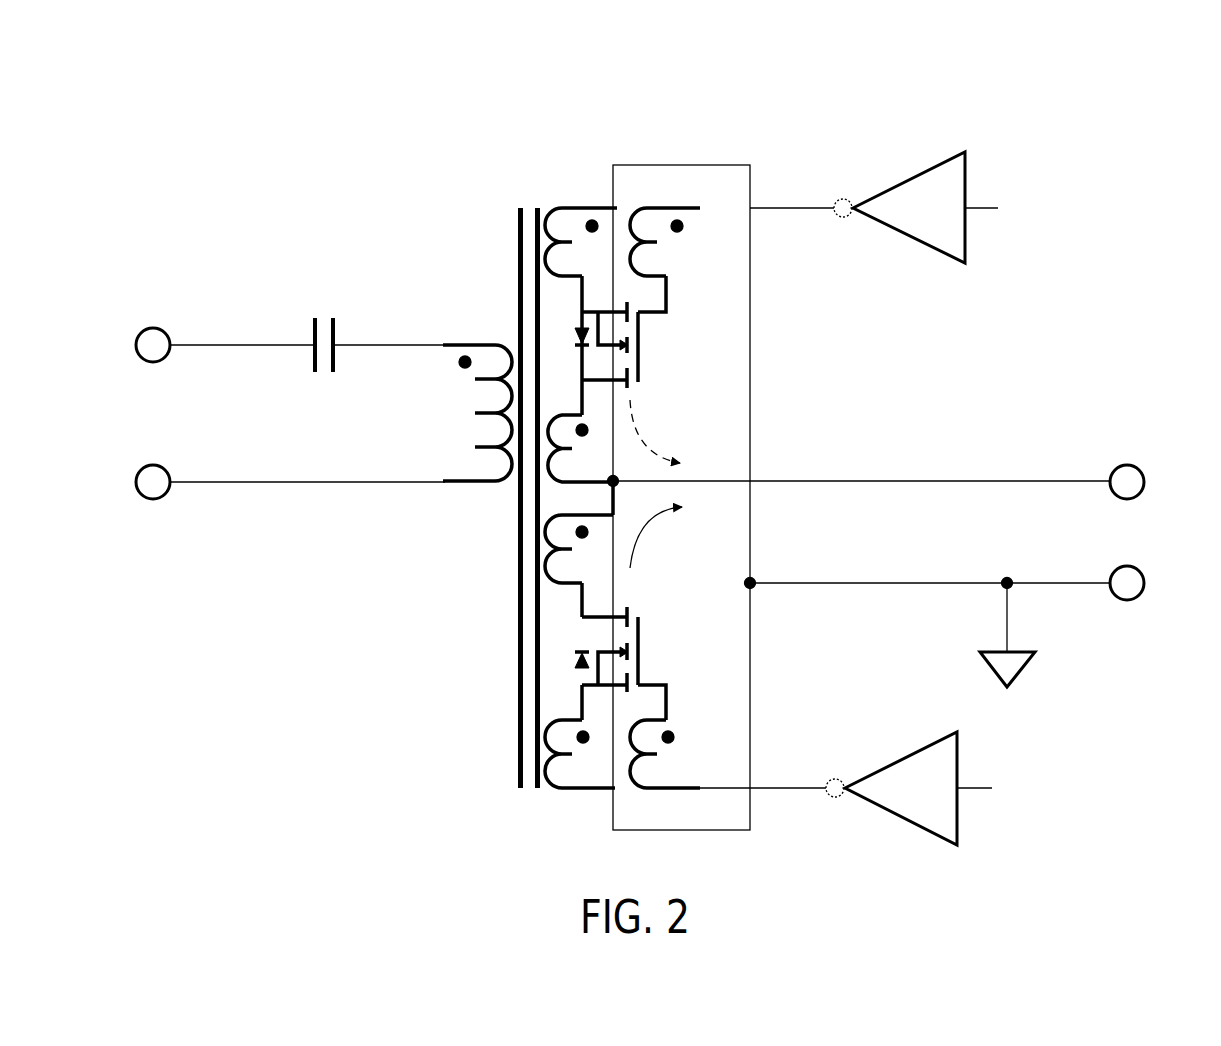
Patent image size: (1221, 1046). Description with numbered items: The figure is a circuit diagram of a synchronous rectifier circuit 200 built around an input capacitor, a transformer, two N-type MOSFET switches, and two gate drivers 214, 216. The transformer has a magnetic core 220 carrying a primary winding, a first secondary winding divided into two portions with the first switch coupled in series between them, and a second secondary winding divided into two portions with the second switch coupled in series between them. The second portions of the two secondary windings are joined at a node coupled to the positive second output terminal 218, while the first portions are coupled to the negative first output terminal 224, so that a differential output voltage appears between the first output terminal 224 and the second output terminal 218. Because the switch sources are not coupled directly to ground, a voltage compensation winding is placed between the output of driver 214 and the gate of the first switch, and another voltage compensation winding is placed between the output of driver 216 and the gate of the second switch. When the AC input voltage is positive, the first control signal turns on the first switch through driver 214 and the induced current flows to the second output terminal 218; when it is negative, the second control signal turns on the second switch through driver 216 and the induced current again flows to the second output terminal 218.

The synchronous rectifier circuit 200 is at (1104, 165).
The driver 214 is at (881, 788).
The driver 216 is at (919, 207).
The second output terminal 218 is at (1124, 466).
The magnetic core 220 is at (517, 623).
The first output terminal 224 is at (1137, 598).